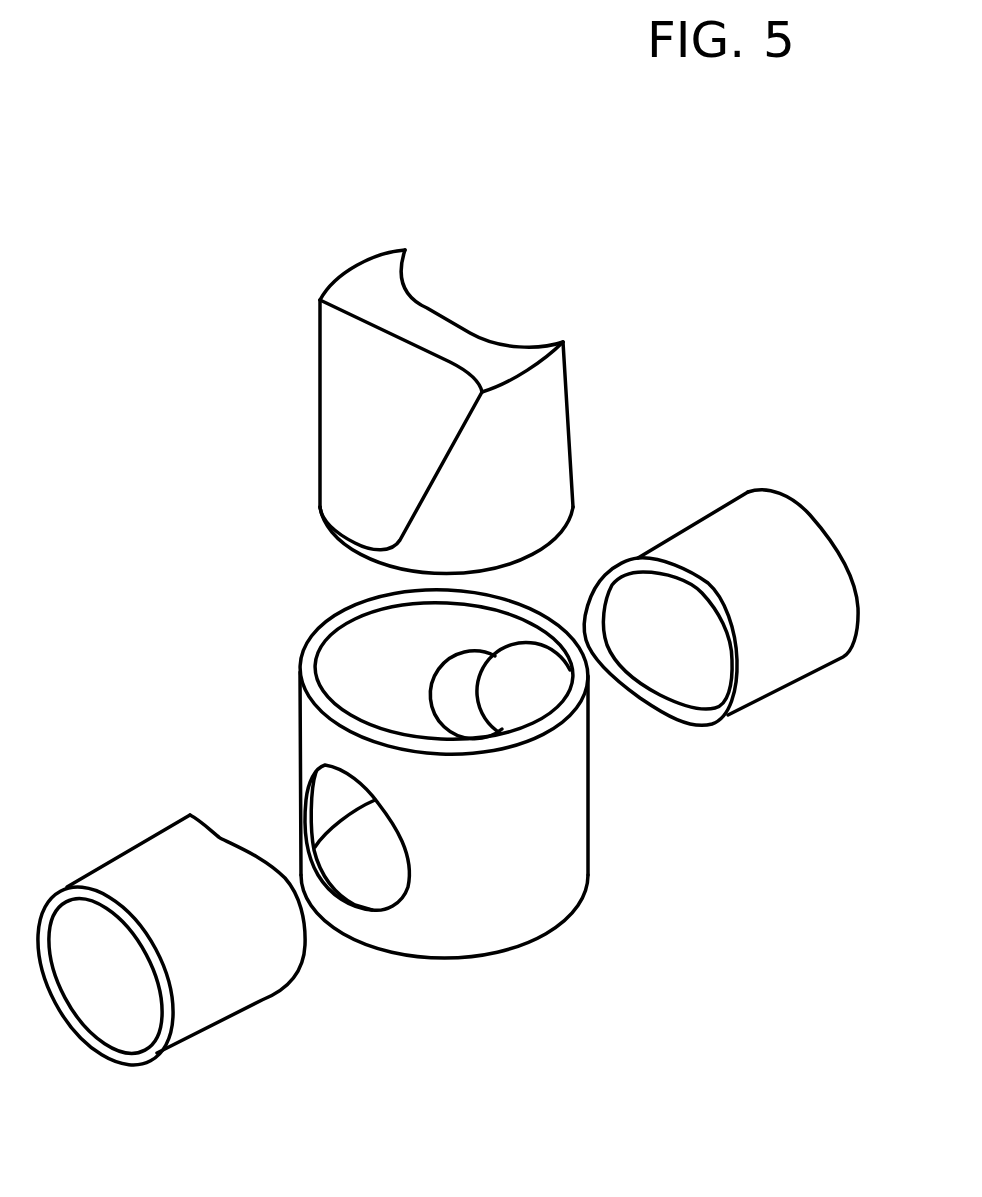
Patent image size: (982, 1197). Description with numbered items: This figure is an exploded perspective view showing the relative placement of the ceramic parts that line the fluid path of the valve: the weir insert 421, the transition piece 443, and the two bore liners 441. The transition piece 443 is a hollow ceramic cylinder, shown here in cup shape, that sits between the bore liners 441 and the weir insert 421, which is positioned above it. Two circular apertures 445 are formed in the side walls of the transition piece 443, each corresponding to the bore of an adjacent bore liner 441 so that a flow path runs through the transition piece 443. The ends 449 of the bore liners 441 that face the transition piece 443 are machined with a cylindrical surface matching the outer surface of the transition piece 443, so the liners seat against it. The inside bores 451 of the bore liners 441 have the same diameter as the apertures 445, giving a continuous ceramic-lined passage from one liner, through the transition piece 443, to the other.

The weir insert 421 is at (320, 407).
The bore liner 441 is at (792, 497).
The transition piece 443 is at (565, 845).
The aperture 445 is at (528, 683).
The end of bore liner 449 is at (645, 695).
The inside bore 451 is at (688, 662).